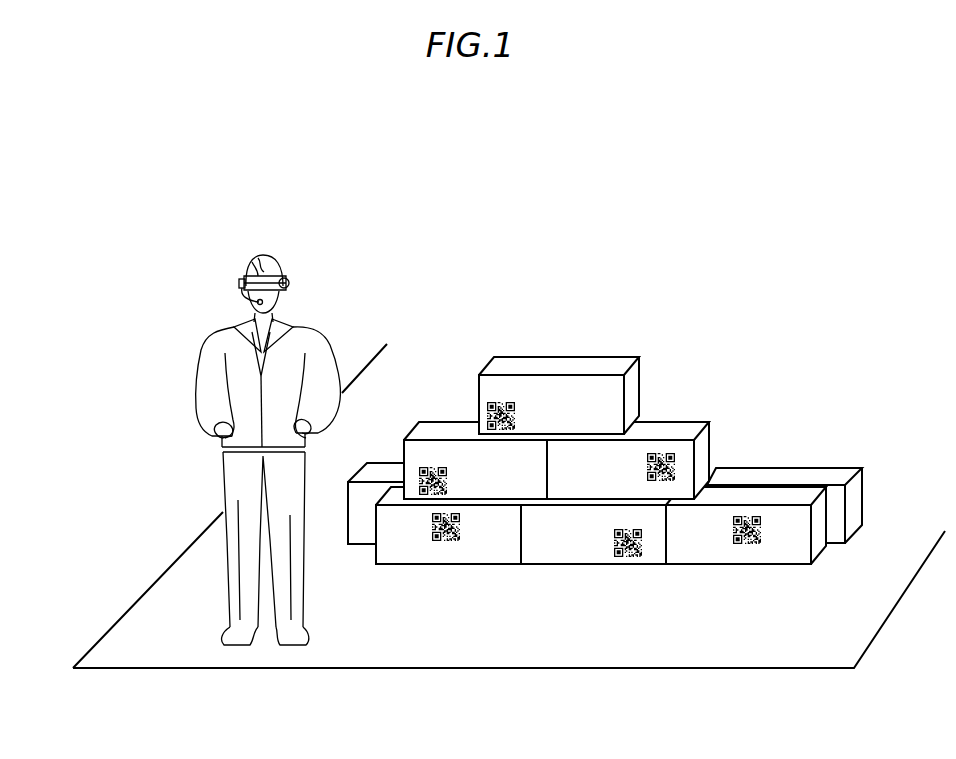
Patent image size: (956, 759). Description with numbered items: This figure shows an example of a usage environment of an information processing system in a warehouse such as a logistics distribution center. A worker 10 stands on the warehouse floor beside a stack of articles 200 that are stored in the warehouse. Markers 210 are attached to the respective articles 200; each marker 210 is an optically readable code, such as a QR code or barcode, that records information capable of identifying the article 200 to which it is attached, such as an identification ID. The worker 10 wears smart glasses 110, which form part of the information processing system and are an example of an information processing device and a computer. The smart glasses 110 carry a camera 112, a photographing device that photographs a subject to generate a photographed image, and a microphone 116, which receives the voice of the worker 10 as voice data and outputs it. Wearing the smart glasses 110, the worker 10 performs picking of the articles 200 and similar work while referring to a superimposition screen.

The worker 10 is at (303, 337).
The smart glasses 110 is at (268, 263).
The camera 112 is at (288, 281).
The microphone 116 is at (237, 288).
The articles 200 is at (557, 362).
The marker 210 is at (449, 541).